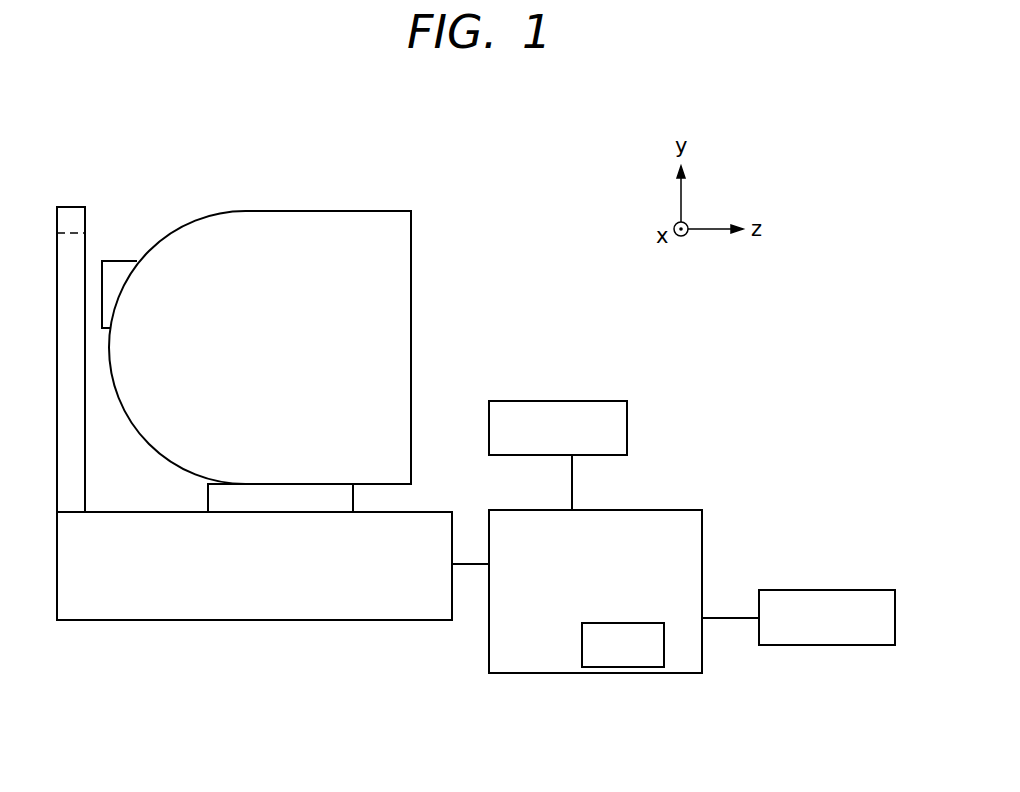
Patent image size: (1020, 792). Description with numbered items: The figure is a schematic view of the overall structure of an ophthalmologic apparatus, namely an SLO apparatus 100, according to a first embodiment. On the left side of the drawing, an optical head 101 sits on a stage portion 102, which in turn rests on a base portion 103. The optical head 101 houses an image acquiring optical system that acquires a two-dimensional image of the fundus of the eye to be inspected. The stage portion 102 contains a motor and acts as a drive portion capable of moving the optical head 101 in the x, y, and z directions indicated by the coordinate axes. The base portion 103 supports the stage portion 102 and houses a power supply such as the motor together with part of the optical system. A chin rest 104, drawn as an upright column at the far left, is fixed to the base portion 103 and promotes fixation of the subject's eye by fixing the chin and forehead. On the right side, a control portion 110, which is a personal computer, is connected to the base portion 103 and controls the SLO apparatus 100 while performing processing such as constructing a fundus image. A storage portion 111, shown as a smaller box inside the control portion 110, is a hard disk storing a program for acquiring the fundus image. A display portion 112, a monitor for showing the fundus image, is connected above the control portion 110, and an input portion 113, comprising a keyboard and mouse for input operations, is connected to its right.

The SLO apparatus 100 is at (427, 170).
The optical head 101 is at (395, 298).
The stage portion 102 is at (216, 492).
The base portion 103 is at (139, 610).
The chin rest 104 is at (72, 205).
The control portion 110 is at (685, 539).
The storage portion 111 is at (623, 657).
The display portion 112 is at (612, 427).
The input portion 113 is at (827, 632).